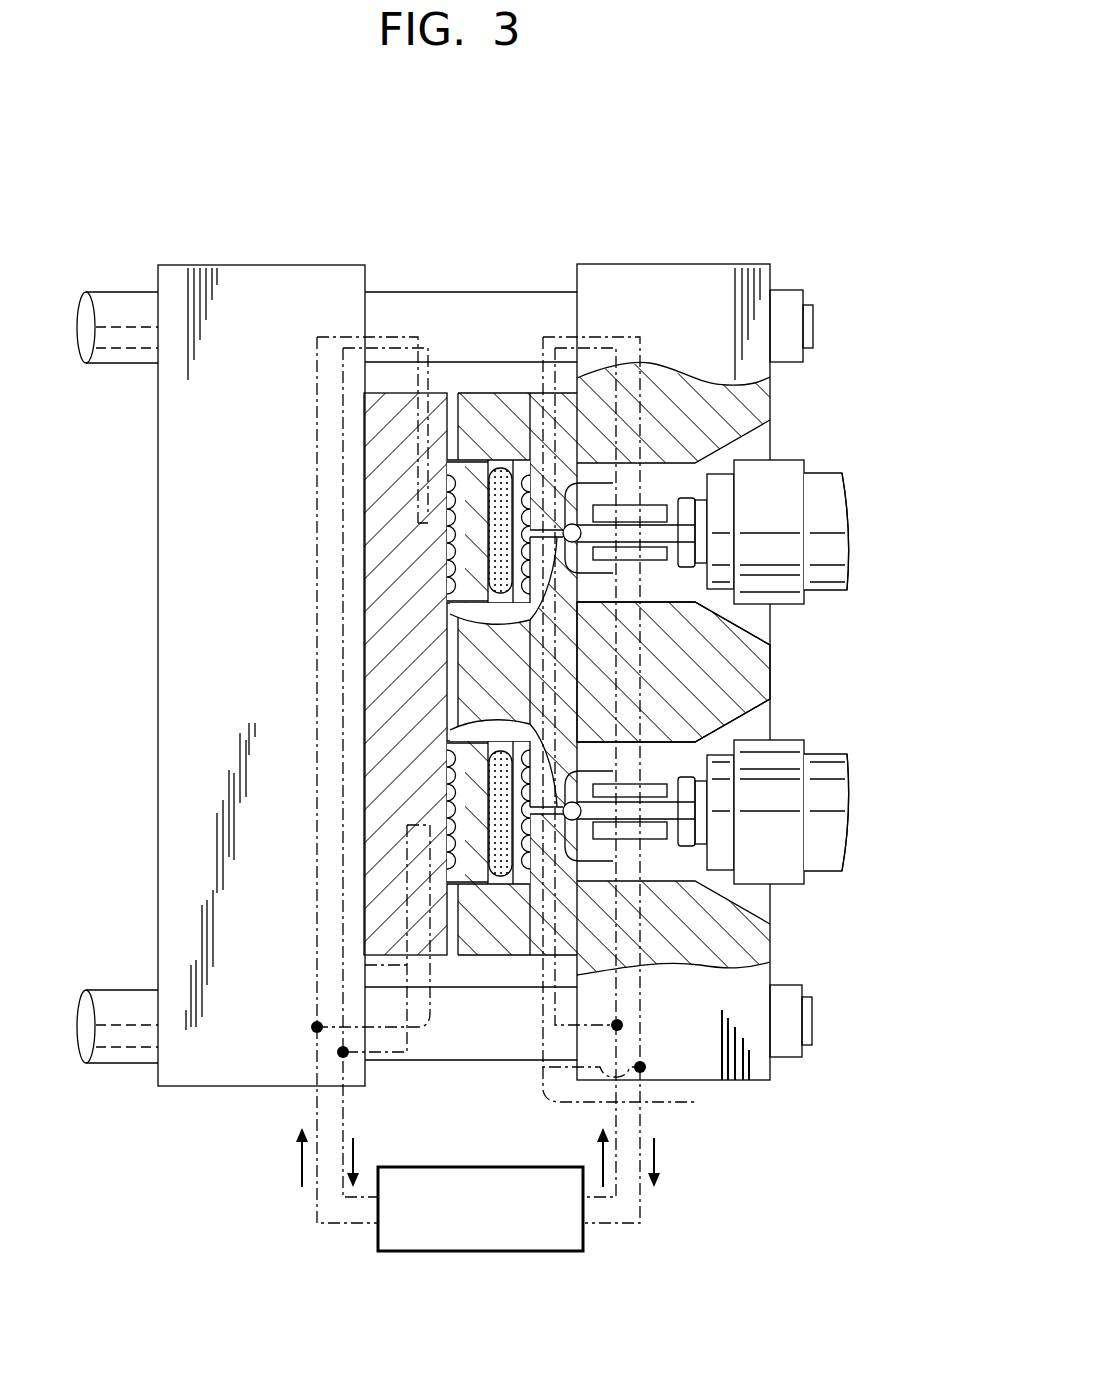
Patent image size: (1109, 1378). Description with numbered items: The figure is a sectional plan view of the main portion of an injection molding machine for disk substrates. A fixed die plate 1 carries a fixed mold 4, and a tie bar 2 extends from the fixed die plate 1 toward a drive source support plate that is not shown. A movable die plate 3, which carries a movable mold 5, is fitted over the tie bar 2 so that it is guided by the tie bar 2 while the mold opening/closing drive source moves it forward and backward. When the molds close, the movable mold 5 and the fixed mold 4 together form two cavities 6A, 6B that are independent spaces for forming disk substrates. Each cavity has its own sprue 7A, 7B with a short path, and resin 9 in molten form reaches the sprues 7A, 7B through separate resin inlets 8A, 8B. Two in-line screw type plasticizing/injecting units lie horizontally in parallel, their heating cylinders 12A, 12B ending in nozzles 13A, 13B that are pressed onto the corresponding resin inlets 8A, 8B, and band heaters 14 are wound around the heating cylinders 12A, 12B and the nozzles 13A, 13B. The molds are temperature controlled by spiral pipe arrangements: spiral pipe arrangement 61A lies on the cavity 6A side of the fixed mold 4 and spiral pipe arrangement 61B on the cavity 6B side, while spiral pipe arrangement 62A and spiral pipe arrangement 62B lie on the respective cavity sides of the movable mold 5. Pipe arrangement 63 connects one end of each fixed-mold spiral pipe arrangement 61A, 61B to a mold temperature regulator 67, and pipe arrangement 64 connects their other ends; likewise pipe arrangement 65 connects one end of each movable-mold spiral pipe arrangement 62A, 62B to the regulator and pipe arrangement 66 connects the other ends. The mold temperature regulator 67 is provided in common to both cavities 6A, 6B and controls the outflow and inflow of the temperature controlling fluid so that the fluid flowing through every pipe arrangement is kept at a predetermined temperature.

The fixed die plate 1 is at (682, 264).
The tie bar 2 is at (128, 292).
The movable die plate 3 is at (262, 265).
The fixed mold 4 is at (490, 458).
The movable mold 5 is at (378, 393).
The cavity 6A is at (505, 460).
The cavity 6B is at (502, 884).
The sprue 7A is at (450, 614).
The sprue 7B is at (450, 727).
The resin inlet 8A is at (655, 500).
The resin inlet 8B is at (657, 788).
The resin 9 is at (447, 507).
The heating cylinder 12A is at (852, 550).
The heating cylinder 12B is at (852, 832).
The nozzle 13A is at (600, 583).
The nozzle 13B is at (580, 860).
The band heater 14 is at (712, 486).
The spiral pipe arrangement 61A is at (522, 470).
The spiral pipe arrangement 61B is at (538, 897).
The spiral pipe arrangement 62A is at (440, 470).
The spiral pipe arrangement 62B is at (462, 897).
The pipe arrangement 63 is at (640, 1035).
The pipe arrangement 64 is at (620, 930).
The pipe arrangement 65 is at (365, 966).
The pipe arrangement 66 is at (397, 1060).
The mold temperature regulator 67 is at (480, 1251).